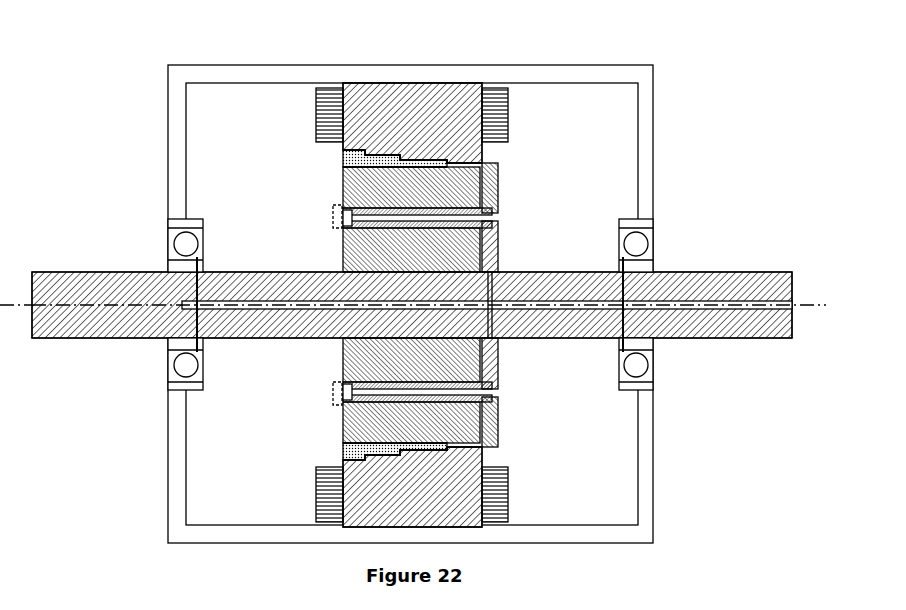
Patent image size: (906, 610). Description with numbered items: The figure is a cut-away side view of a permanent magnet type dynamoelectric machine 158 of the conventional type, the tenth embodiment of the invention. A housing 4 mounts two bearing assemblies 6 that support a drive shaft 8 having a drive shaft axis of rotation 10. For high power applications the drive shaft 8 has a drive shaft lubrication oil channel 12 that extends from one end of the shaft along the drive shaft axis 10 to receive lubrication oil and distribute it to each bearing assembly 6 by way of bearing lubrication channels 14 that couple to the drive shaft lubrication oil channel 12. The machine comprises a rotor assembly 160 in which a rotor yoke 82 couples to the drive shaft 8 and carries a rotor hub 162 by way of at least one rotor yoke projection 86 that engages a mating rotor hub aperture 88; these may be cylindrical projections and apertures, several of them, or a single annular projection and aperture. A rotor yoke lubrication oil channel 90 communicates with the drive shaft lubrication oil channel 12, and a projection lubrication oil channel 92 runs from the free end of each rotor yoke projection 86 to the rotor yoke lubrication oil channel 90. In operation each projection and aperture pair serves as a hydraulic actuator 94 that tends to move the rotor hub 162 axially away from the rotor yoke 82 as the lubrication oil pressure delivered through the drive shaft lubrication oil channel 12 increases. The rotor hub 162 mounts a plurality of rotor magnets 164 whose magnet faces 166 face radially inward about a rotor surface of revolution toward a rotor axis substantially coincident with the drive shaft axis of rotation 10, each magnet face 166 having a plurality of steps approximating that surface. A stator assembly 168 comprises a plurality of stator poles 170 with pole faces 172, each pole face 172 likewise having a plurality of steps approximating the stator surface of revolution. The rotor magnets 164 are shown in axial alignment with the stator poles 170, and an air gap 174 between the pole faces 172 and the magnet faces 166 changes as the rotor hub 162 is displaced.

The permanent magnet type dynamoelectric machine 158 is at (94, 126).
The housing 4 is at (603, 84).
The bearing assembly 6 is at (168, 230).
The drive shaft 8 is at (723, 271).
The drive shaft axis of rotation 10 is at (16, 306).
The drive shaft lubrication oil channel 12 is at (793, 303).
The bearing lubrication channel 14 is at (201, 262).
The rotor yoke 82 is at (500, 256).
The rotor yoke projection 86 is at (333, 226).
The rotor hub aperture 88 is at (348, 215).
The rotor yoke lubrication oil channel 90 is at (494, 291).
The projection lubrication oil channel 92 is at (402, 212).
The hydraulic actuator 94 is at (496, 212).
The rotor assembly 160 is at (506, 398).
The rotor hub 162 is at (340, 357).
The rotor magnet 164 is at (402, 147).
The magnet face 166 is at (340, 167).
The stator assembly 168 is at (337, 80).
The stator pole 170 is at (484, 92).
The pole face 172 is at (342, 168).
The air gap 174 is at (374, 150).